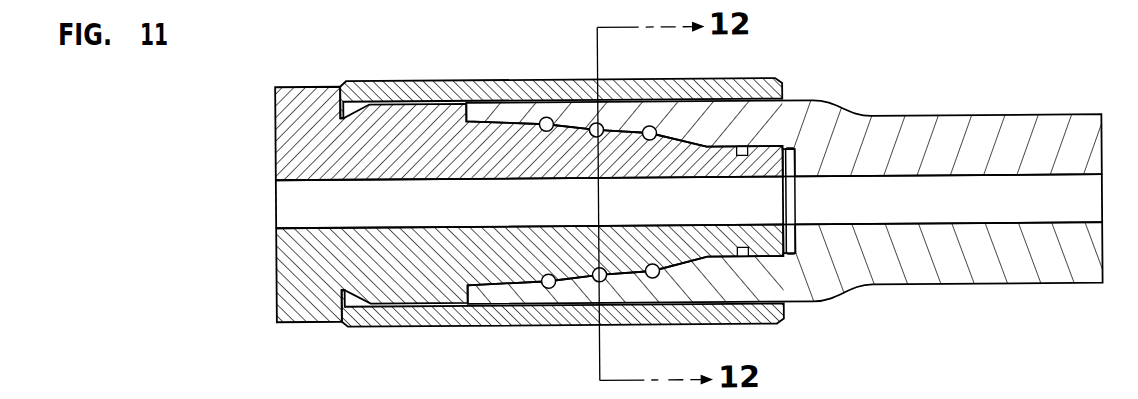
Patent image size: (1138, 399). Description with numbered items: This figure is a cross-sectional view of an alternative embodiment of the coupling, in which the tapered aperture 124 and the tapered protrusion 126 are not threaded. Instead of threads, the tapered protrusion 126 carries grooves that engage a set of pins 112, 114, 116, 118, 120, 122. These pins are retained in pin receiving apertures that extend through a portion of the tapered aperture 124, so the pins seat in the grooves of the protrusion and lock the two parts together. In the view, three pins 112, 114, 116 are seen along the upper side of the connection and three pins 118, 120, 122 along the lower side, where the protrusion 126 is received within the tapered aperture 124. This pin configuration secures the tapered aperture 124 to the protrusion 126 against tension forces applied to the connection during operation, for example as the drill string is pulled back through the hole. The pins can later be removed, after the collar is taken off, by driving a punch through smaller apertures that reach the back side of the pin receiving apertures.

The pin 112 is at (650, 133).
The pin 114 is at (597, 130).
The pin 116 is at (547, 124).
The pin 118 is at (652, 271).
The pin 120 is at (599, 274).
The pin 122 is at (548, 280).
The tapered aperture 124 is at (748, 130).
The tapered protrusion 126 is at (662, 247).